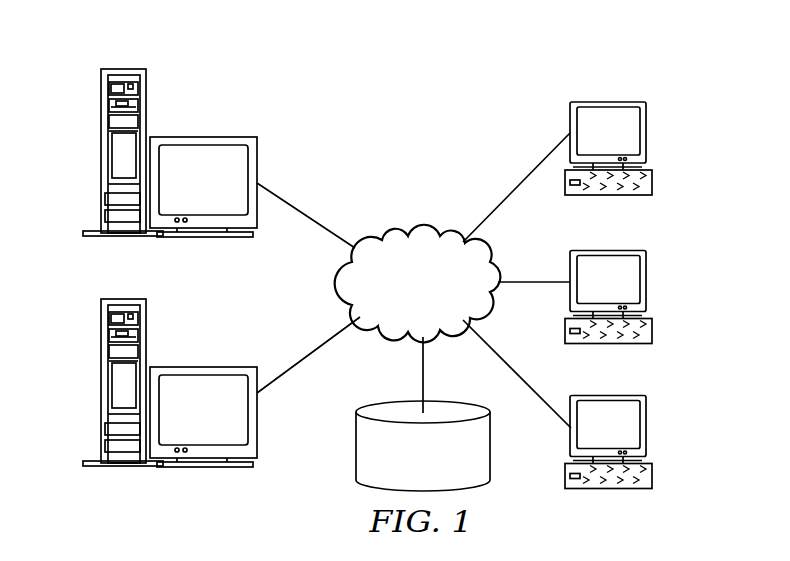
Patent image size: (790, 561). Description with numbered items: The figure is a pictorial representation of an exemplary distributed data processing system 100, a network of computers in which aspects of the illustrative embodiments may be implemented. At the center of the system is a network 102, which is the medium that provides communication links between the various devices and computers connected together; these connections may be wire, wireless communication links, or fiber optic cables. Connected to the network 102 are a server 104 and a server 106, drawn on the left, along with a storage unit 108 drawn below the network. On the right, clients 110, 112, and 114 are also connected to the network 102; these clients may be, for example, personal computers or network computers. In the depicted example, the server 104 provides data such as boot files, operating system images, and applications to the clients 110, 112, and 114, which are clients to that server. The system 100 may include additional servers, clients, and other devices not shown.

The distributed data processing system 100 is at (476, 110).
The network 102 is at (393, 230).
The server 104 is at (102, 153).
The server 106 is at (102, 383).
The storage unit 108 is at (355, 458).
The client 110 is at (647, 132).
The client 112 is at (647, 281).
The client 114 is at (647, 427).